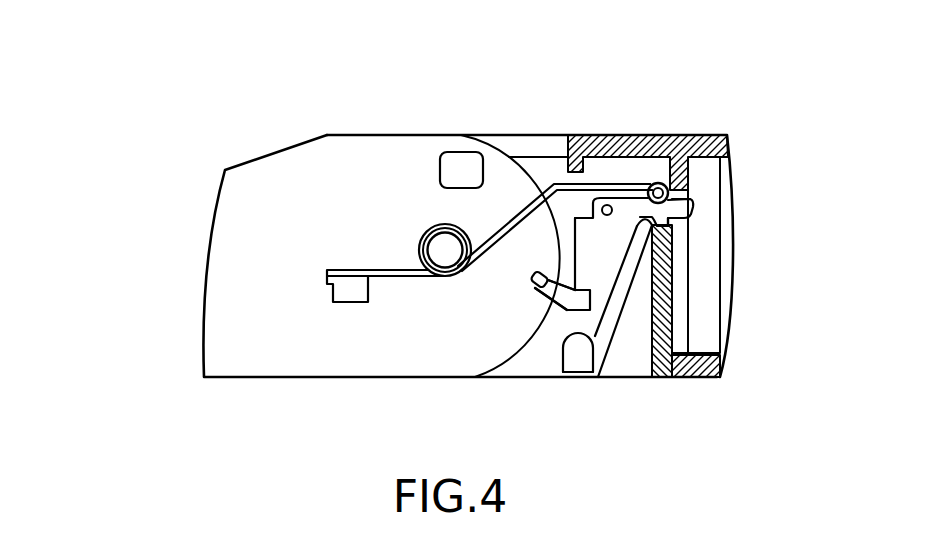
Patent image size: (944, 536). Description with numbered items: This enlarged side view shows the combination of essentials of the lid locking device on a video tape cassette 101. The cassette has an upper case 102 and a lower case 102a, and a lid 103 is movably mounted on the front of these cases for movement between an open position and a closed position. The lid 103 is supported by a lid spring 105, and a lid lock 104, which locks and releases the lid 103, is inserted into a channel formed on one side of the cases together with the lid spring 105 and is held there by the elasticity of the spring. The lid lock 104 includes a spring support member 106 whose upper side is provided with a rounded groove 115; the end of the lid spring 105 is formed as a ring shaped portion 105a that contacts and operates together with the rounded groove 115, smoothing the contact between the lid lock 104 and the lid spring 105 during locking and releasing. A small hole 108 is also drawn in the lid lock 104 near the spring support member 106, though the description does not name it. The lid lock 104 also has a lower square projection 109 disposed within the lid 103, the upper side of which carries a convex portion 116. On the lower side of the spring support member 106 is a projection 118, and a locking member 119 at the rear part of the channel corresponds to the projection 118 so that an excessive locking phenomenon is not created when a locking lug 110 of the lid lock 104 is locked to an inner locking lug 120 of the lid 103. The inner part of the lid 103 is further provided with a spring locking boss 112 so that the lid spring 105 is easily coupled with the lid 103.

The cassette 101 is at (254, 138).
The upper case 102 is at (725, 136).
The lower case 102a is at (721, 360).
The lid 103 is at (188, 340).
The lid lock 104 is at (616, 312).
The lid spring 105 is at (512, 218).
The ring shaped portion 105a is at (665, 182).
The spring support member 106 is at (692, 205).
The hole 108 is at (607, 205).
The lower square projection 109 is at (568, 360).
The locking lug 110 is at (543, 298).
The spring locking boss 112 is at (440, 262).
The rounded groove 115 is at (669, 189).
The convex portion 116 is at (575, 328).
The projection 118 is at (671, 225).
The locking member 119 is at (664, 280).
The inner locking lug 120 is at (530, 284).